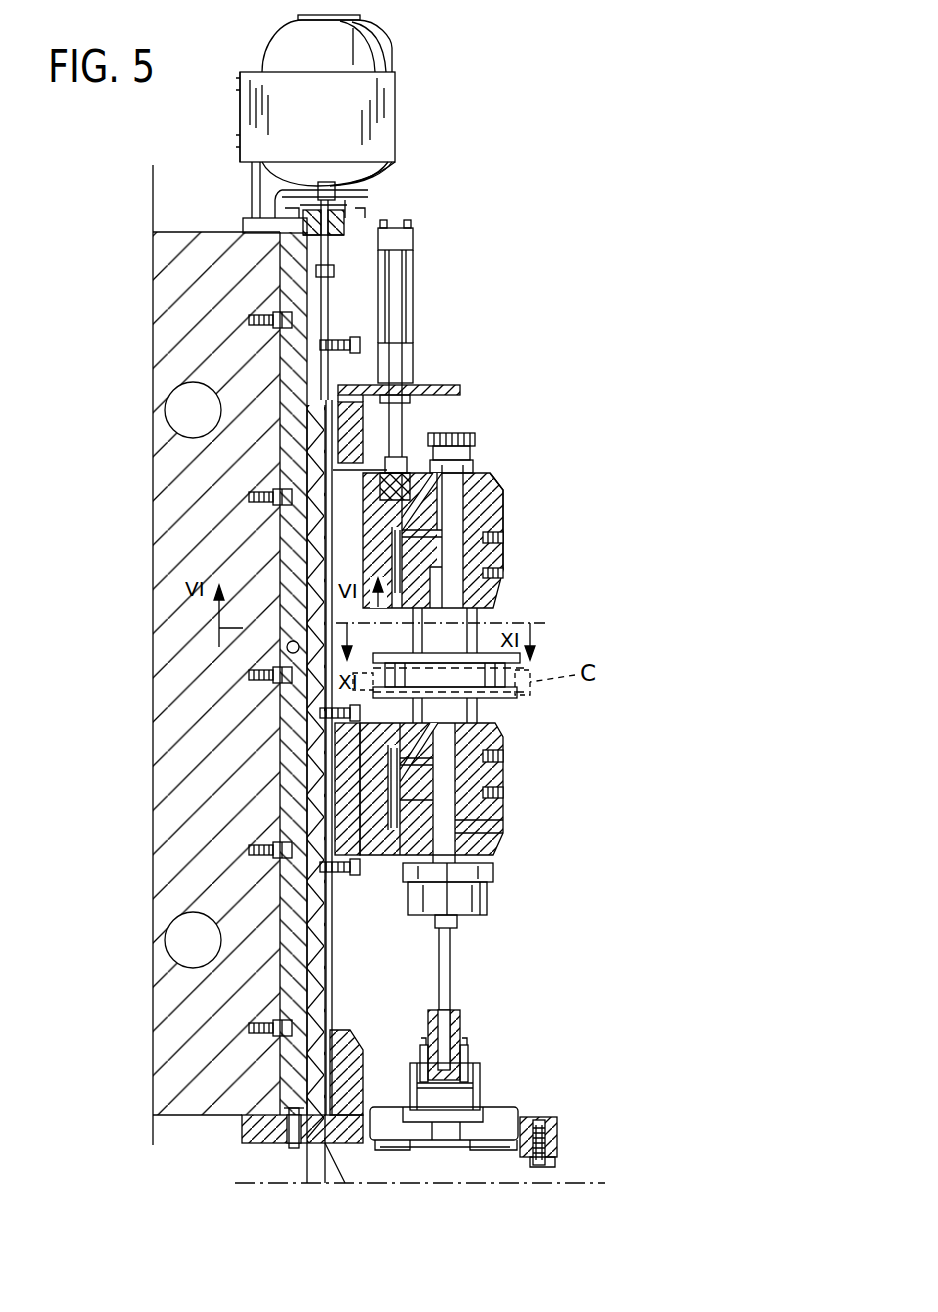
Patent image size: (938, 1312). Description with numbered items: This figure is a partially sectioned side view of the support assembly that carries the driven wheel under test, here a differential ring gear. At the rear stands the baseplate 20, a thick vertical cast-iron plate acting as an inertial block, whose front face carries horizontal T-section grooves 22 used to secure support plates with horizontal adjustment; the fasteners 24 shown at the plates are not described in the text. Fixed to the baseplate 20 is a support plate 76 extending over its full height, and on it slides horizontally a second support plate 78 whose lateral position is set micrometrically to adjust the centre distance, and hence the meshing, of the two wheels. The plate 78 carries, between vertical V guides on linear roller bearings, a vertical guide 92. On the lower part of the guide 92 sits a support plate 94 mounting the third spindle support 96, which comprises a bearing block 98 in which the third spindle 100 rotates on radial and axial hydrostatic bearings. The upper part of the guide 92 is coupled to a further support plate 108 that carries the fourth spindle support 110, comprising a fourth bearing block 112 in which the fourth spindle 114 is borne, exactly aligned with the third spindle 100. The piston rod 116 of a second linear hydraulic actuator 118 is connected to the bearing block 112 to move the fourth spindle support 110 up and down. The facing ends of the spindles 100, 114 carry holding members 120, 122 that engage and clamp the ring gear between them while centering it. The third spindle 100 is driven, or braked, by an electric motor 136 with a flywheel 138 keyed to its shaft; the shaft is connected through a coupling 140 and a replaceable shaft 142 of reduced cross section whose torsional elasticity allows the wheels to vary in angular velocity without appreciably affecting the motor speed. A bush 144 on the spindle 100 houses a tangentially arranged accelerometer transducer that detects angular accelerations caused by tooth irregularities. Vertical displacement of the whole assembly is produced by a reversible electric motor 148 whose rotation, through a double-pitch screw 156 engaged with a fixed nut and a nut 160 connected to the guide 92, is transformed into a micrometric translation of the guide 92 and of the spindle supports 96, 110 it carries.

The baseplate 20 is at (150, 266).
The T-section grooves 22 is at (273, 497).
The mounting bolts 24 is at (258, 880).
The support plate 76 is at (286, 774).
The second support plate 78 is at (313, 1002).
The vertical guide 92 is at (332, 948).
The support plate 94 is at (343, 833).
The third spindle support 96 is at (508, 782).
The bearing block 98 is at (487, 840).
The third spindle 100 is at (500, 812).
The support plate 108 is at (355, 425).
The fourth spindle support 110 is at (518, 505).
The fourth bearing block 112 is at (492, 480).
The fourth spindle 114 is at (500, 545).
The piston rod 116 is at (398, 436).
The second linear hydraulic actuator 118 is at (414, 290).
The holding member 120 is at (508, 706).
The holding member 122 is at (536, 660).
The electric motor 136 is at (522, 1183).
The flywheel 138 is at (505, 1120).
The coupling 140 is at (478, 1065).
The shaft 142 is at (452, 952).
The bush 144 is at (487, 612).
The reversible electric motor 148 is at (385, 30).
The double-pitch screw 156 is at (345, 225).
The nut 160 is at (338, 268).